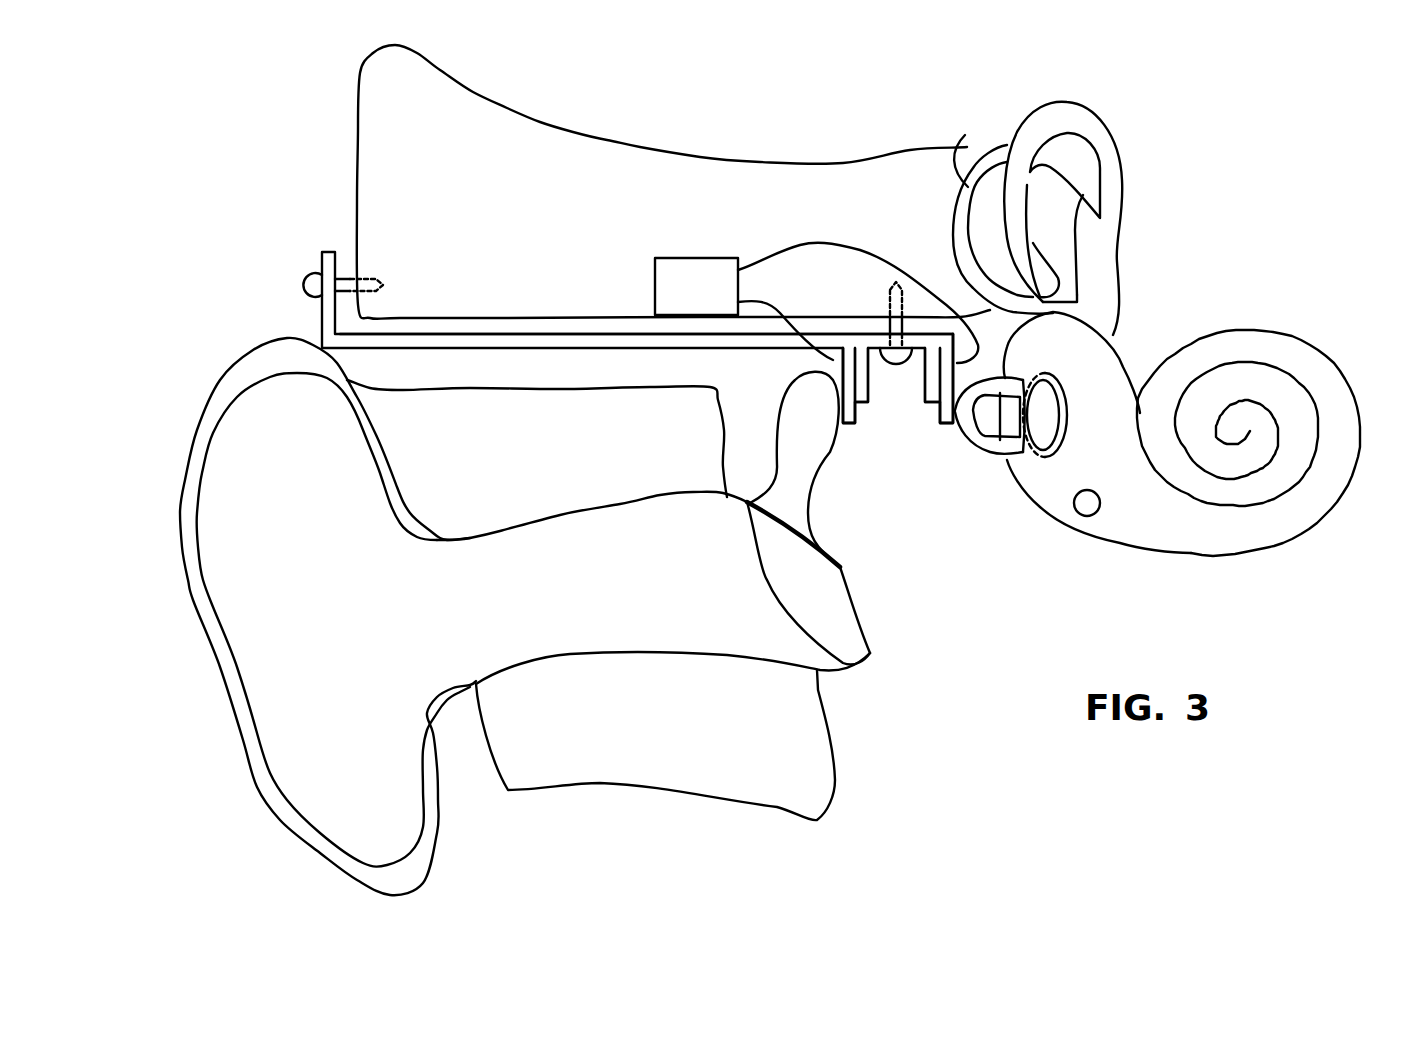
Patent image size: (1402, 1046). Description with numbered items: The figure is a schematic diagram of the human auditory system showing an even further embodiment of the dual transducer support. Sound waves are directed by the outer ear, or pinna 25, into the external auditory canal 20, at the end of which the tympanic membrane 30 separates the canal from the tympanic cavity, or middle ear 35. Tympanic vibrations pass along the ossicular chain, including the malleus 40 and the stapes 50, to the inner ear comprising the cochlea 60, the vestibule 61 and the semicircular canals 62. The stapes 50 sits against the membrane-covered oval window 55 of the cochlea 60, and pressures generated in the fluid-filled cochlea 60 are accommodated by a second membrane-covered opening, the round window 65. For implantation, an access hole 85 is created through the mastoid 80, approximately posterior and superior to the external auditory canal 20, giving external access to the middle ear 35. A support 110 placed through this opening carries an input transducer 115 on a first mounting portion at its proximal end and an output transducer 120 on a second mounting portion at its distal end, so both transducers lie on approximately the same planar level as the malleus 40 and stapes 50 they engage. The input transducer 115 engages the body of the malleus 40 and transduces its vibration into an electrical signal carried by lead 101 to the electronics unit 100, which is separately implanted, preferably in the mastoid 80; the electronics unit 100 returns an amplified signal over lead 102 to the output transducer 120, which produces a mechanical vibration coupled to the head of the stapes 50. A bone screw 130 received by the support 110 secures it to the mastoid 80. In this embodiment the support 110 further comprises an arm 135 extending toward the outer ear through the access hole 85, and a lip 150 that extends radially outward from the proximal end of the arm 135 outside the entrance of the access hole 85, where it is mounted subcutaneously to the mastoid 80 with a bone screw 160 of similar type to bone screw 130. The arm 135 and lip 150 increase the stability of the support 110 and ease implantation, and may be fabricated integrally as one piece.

The external auditory canal 20 is at (588, 606).
The outer ear (pinna) 25 is at (244, 750).
The tympanic membrane (eardrum) 30 is at (795, 602).
The tympanic cavity (middle ear) 35 is at (918, 528).
The malleus 40 is at (780, 430).
The stapes 50 is at (987, 457).
The oval window 55 is at (1043, 497).
The cochlea 60 is at (1250, 332).
The vestibule 61 is at (1085, 315).
The semicircular canals 62 is at (1033, 128).
The round window 65 is at (1085, 516).
The mastoid 80 is at (491, 204).
The access hole 85 is at (253, 318).
The electronics unit 100 is at (672, 300).
The lead 101 is at (773, 310).
The lead 102 is at (820, 243).
The support 110 is at (870, 380).
The input transducer 115 is at (853, 427).
The output transducer 120 is at (943, 428).
The bone screw 130 is at (885, 323).
The arm 135 is at (703, 350).
The lip 150 is at (320, 332).
The bone screw 160 is at (313, 277).